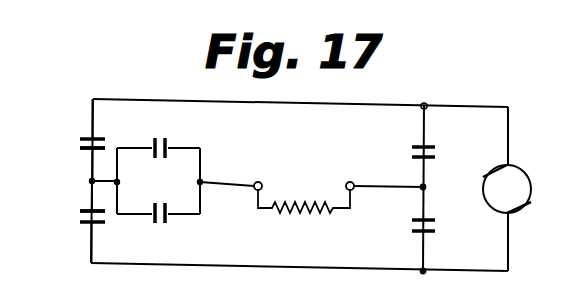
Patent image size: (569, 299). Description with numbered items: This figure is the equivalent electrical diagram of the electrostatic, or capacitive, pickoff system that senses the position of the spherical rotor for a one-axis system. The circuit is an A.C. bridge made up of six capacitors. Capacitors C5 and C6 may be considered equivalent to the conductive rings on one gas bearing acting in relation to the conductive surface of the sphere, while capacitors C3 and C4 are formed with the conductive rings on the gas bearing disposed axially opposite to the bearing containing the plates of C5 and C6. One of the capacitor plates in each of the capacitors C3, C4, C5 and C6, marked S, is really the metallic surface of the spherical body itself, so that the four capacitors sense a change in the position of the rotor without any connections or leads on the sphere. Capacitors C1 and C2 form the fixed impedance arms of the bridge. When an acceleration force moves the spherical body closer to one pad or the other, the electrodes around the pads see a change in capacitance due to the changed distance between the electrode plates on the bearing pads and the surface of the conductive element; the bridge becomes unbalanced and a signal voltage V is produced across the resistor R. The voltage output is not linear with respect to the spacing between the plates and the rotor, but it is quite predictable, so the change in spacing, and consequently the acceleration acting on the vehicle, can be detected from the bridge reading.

The fixed impedance arm capacitor C1 is at (408, 150).
The fixed impedance arm capacitor C2 is at (408, 224).
The pickoff capacitor C3 is at (161, 228).
The pickoff capacitor C4 is at (74, 222).
The pickoff capacitor C5 is at (74, 140).
The pickoff capacitor C6 is at (161, 136).
The spherical body surface capacitor plate S is at (80, 150).
The signal voltage V is at (342, 186).
The resistor R is at (319, 215).